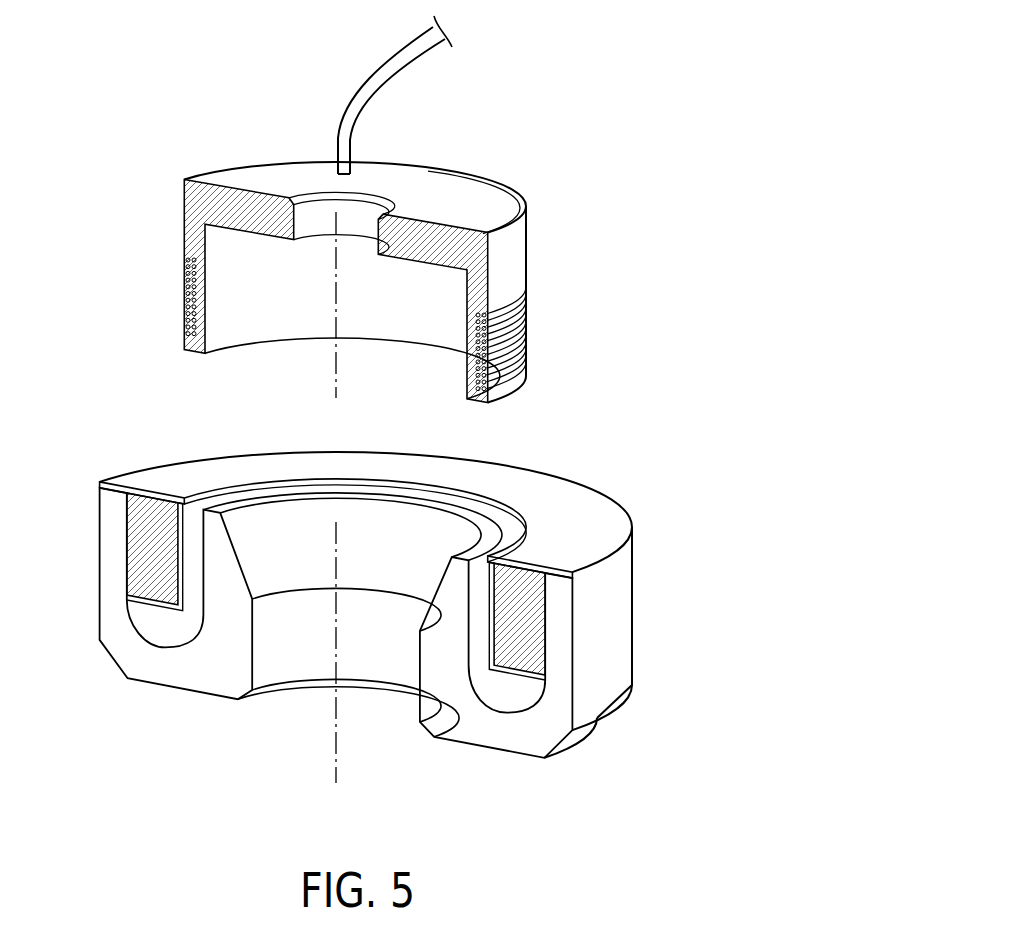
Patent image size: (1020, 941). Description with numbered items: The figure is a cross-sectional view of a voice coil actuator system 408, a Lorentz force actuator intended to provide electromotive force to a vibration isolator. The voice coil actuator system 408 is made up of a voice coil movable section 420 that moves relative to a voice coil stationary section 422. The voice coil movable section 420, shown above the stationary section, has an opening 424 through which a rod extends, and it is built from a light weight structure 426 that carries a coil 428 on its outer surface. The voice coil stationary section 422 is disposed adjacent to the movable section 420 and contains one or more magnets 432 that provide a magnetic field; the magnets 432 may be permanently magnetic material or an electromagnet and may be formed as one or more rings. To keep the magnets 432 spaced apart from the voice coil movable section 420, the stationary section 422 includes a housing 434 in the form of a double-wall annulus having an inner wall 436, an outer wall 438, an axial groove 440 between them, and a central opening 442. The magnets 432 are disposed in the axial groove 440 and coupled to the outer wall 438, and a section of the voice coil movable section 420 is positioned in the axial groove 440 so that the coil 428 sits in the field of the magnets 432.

The voice coil actuator system 408 is at (537, 68).
The voice coil movable section 420 is at (520, 183).
The voice coil stationary section 422 is at (657, 542).
The opening 424 is at (354, 218).
The light weight structure 426 is at (522, 257).
The coil 428 is at (527, 337).
The magnets 432 is at (535, 572).
The housing 434 is at (558, 651).
The inner wall 436 is at (455, 590).
The outer wall 438 is at (560, 622).
The axial groove 440 is at (514, 520).
The central opening 442 is at (273, 530).